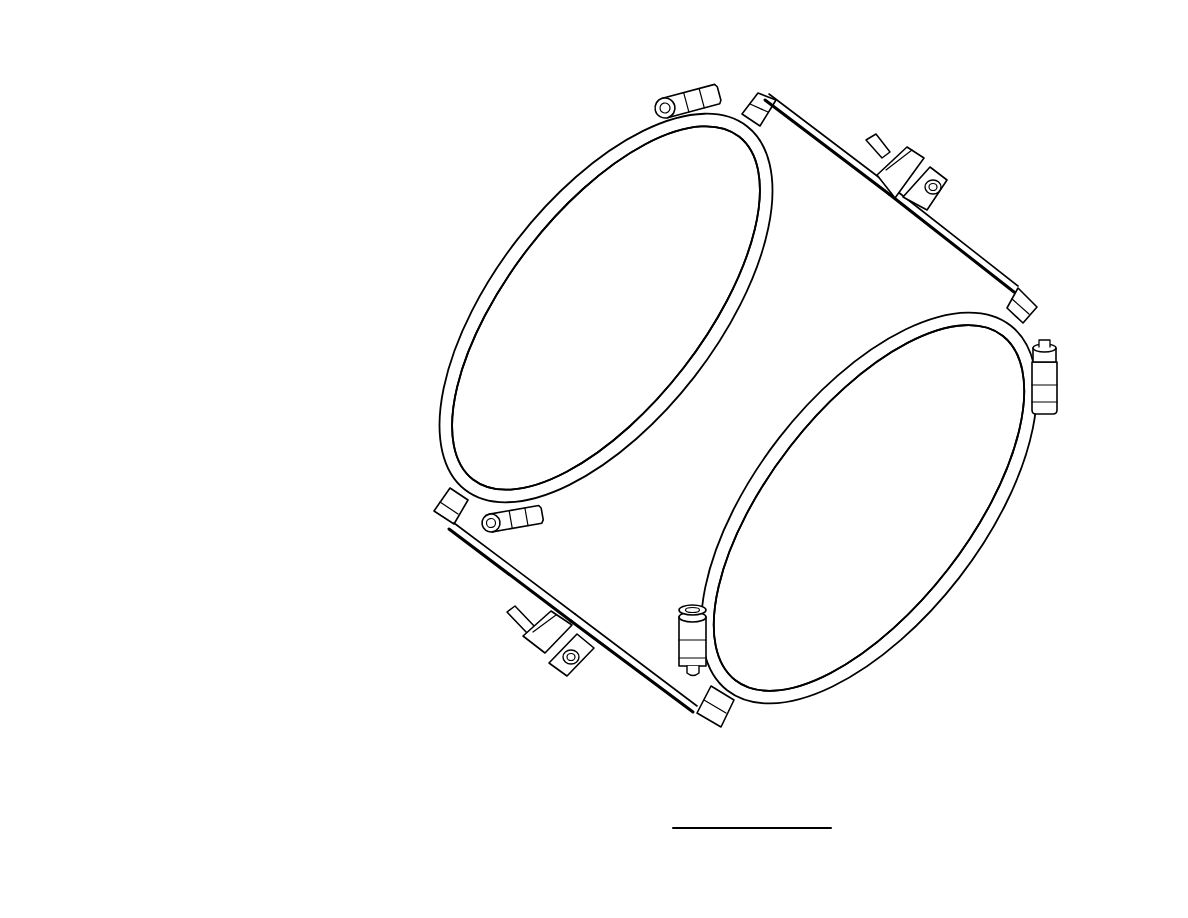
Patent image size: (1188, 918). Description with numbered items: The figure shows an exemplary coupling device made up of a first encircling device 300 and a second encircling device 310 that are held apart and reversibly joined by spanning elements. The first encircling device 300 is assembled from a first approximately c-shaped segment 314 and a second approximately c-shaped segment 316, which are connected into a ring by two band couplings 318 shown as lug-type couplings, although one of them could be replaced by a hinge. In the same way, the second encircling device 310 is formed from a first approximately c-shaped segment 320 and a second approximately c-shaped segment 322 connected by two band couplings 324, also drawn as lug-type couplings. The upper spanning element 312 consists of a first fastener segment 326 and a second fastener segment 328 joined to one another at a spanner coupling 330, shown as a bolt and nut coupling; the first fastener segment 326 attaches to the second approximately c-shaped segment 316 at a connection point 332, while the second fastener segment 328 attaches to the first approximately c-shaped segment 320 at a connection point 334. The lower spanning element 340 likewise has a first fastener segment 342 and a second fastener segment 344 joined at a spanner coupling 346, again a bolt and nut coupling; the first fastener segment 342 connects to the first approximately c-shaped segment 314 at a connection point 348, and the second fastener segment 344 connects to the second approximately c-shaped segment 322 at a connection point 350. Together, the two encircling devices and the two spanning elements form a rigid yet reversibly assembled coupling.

The first encircling device 300 is at (380, 291).
The second encircling device 310 is at (995, 662).
The spanning element 312 is at (995, 72).
The first approximately c-shaped segment 314 is at (558, 190).
The second approximately c-shaped segment 316 is at (713, 323).
The band coupling 318 is at (680, 88).
The first approximately c-shaped segment 320 is at (838, 387).
The second approximately c-shaped segment 322 is at (1004, 531).
The band coupling 324 is at (1078, 381).
The first fastener segment 326 is at (792, 113).
The second fastener segment 328 is at (1000, 271).
The spanner coupling 330 is at (945, 148).
The connection point 332 is at (763, 138).
The connection point 334 is at (998, 307).
The spanning element 340 is at (470, 723).
The first fastener segment 342 is at (467, 542).
The second fastener segment 344 is at (663, 694).
The spanner coupling 346 is at (518, 660).
The connection point 348 is at (443, 487).
The connection point 350 is at (737, 712).